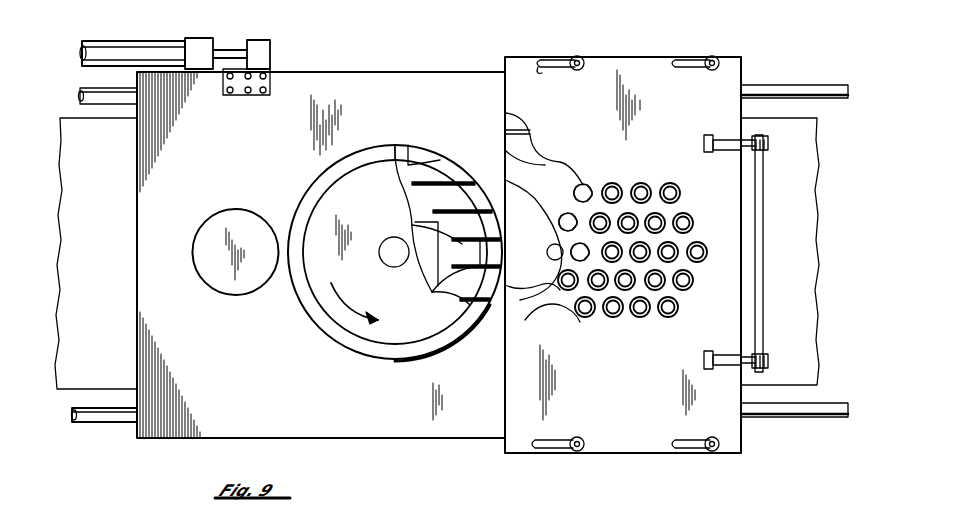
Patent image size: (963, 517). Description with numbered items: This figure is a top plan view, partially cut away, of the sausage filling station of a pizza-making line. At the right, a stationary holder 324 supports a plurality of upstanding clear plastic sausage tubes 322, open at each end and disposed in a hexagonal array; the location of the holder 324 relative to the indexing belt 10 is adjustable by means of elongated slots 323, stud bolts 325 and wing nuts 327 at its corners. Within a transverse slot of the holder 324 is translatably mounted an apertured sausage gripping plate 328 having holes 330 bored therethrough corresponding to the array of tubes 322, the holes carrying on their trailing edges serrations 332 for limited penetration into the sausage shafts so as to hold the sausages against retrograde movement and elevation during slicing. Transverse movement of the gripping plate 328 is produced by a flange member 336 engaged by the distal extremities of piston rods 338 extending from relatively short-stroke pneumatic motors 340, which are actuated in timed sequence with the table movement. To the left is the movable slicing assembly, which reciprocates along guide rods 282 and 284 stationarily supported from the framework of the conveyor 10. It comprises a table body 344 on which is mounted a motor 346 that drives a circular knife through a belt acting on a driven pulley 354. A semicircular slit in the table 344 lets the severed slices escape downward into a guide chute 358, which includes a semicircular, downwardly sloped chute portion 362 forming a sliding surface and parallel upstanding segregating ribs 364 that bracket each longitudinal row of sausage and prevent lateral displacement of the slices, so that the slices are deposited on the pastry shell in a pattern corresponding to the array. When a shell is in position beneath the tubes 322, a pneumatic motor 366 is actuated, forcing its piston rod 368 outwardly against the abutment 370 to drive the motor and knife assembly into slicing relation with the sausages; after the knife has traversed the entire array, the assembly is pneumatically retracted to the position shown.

The indexing belt 10 is at (60, 162).
The guide rod 282 is at (827, 403).
The guide rod 284 is at (800, 85).
The sausage tubes 322 is at (687, 290).
The elongated slots 323 is at (538, 58).
The stationary holder 324 is at (741, 57).
The stud bolts 325 is at (585, 57).
The wing nuts 327 is at (577, 56).
The sausage gripping plate 328 is at (535, 158).
The holes 330 is at (584, 188).
The serrations 332 is at (562, 210).
The flange member 336 is at (763, 200).
The piston rods 338 is at (752, 136).
The pneumatic motors 340 is at (725, 133).
The table body 344 is at (321, 255).
The motor 346 is at (222, 210).
The driven pulley 354 is at (396, 148).
The guide chute 358 is at (442, 140).
The chute portion 362 is at (424, 150).
The segregating ribs 364 is at (445, 214).
The pneumatic motor 366 is at (118, 42).
The piston rod 368 is at (226, 45).
The abutment 370 is at (270, 45).